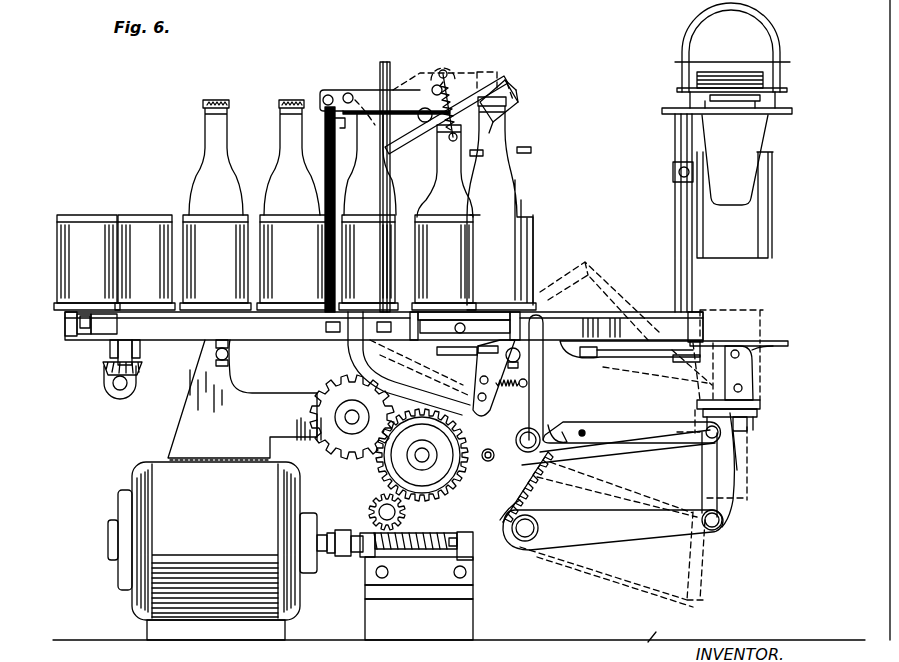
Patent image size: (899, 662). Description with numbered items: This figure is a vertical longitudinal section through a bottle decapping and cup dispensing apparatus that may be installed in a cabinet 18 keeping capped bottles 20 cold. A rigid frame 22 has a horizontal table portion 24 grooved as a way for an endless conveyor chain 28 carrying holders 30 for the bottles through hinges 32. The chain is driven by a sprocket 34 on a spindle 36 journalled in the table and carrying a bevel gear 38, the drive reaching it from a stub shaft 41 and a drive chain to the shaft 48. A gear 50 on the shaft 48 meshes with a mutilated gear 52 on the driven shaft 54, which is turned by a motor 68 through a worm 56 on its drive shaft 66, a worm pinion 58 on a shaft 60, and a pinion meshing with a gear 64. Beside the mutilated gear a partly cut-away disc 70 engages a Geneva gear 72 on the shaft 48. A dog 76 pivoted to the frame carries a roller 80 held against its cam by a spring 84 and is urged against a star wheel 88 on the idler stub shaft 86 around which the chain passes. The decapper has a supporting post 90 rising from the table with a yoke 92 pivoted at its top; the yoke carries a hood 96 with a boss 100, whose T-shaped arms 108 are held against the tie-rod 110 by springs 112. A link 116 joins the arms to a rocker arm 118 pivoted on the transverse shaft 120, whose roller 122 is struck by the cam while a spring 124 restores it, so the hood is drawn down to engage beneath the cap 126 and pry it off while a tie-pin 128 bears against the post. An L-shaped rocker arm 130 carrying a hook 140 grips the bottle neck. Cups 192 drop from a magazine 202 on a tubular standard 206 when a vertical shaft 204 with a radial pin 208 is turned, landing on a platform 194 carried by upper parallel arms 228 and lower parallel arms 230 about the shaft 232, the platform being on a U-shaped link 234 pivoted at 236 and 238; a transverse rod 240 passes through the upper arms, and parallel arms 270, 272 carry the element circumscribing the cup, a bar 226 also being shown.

The cabinet 18 is at (662, 632).
The capped bottle 20 is at (530, 188).
The frame 22 is at (706, 323).
The table portion 24 is at (384, 326).
The endless conveyor chain 28 is at (84, 336).
The holder 30 is at (114, 215).
The hinge 32 is at (66, 320).
The sprocket 34 is at (104, 338).
The spindle 36 is at (150, 342).
The bevel gear 38 is at (142, 368).
The stub shaft 41 is at (114, 393).
The shaft 48 is at (346, 430).
The gear 50 is at (314, 416).
The mutilated gear 52 is at (422, 455).
The driven shaft 54 is at (415, 460).
The worm 56 is at (369, 563).
The worm pinion 58 is at (372, 514).
The shaft 60 is at (405, 534).
The gear 64 is at (458, 533).
The drive shaft 66 is at (337, 560).
The motor 68 is at (212, 551).
The disc 70 is at (408, 457).
The Geneva gear 72 is at (316, 395).
The dog 76 is at (505, 342).
The roller 80 is at (496, 410).
The spring 84 is at (527, 382).
The idler stub shaft 86 is at (457, 312).
The star wheel 88 is at (437, 349).
The supporting post 90 is at (322, 98).
The yoke 92 is at (363, 90).
The hood 96 is at (511, 83).
The boss 100 is at (495, 87).
The T-shaped arms 108 is at (432, 126).
The tie-rod 110 is at (437, 72).
The spring 112 is at (455, 72).
The link 116 is at (368, 185).
The rocker arm 118 is at (565, 430).
The transverse shaft 120 is at (533, 428).
The roller 122 is at (490, 462).
The spring 124 is at (533, 490).
The cap 126 is at (517, 102).
The tie-pin 128 is at (312, 148).
The L-shaped rocker arm 130 is at (532, 150).
The hook 140 is at (481, 157).
The cup 192 is at (752, 137).
The platform 194 is at (762, 407).
The magazine 202 is at (682, 80).
The vertical shaft 204 is at (680, 356).
The tubular standard 206 is at (688, 240).
The pin 208 is at (678, 162).
The bar 226 is at (775, 343).
The upper parallel arms 228 is at (631, 432).
The lower parallel arms 230 is at (613, 530).
The transverse shaft 232 is at (540, 527).
The U-shaped link 234 is at (748, 425).
The pivot 236 is at (722, 528).
The pivot 238 is at (748, 452).
The transverse rod 240 is at (588, 431).
The parallel arm 270 is at (618, 451).
The parallel arm 272 is at (628, 570).